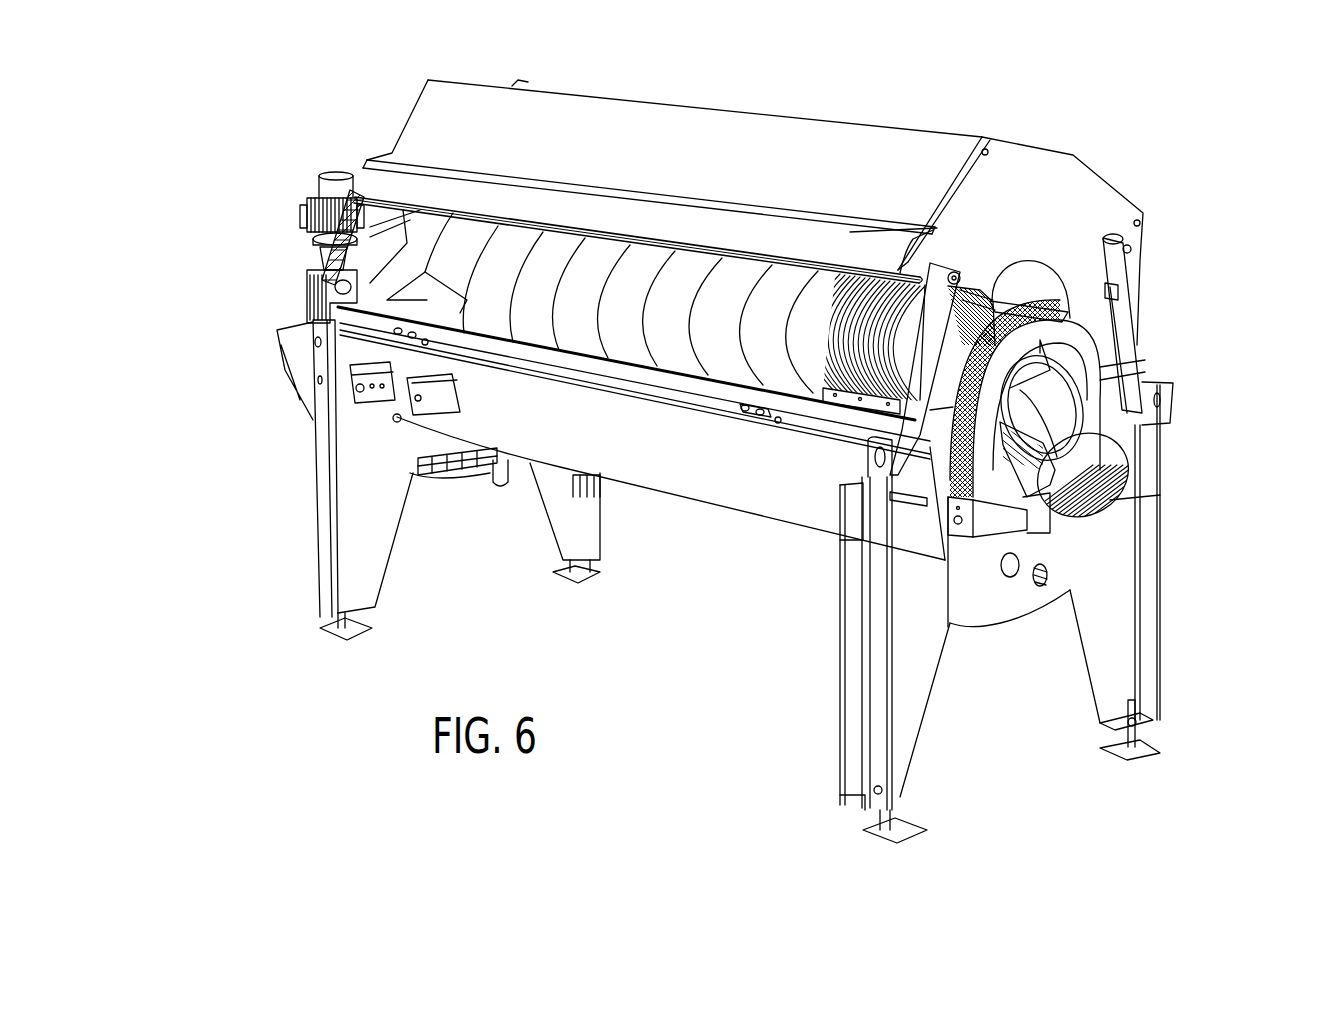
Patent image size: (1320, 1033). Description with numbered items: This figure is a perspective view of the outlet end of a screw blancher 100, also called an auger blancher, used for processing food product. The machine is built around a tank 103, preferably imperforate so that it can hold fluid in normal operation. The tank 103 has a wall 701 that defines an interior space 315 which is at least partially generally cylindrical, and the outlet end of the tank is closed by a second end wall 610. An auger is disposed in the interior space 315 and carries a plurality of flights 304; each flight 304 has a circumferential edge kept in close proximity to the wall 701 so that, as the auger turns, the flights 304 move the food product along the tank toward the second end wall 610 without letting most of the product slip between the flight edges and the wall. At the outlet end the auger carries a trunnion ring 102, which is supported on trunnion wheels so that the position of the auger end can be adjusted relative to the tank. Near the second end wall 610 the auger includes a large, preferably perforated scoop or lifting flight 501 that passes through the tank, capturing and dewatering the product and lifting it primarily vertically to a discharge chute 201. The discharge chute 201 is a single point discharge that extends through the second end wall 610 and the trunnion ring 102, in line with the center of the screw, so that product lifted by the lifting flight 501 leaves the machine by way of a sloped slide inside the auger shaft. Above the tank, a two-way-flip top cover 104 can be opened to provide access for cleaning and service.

The screw blancher 100 is at (283, 121).
The two-way-flip top cover 104 is at (818, 170).
The flights 304 is at (577, 268).
The lifting flight 501 is at (893, 273).
The second end wall 610 is at (1062, 168).
The trunnion ring 102 is at (1067, 370).
The discharge chute 201 is at (1040, 433).
The interior space 315 is at (615, 347).
The wall 701 is at (698, 478).
The tank 103 is at (660, 487).